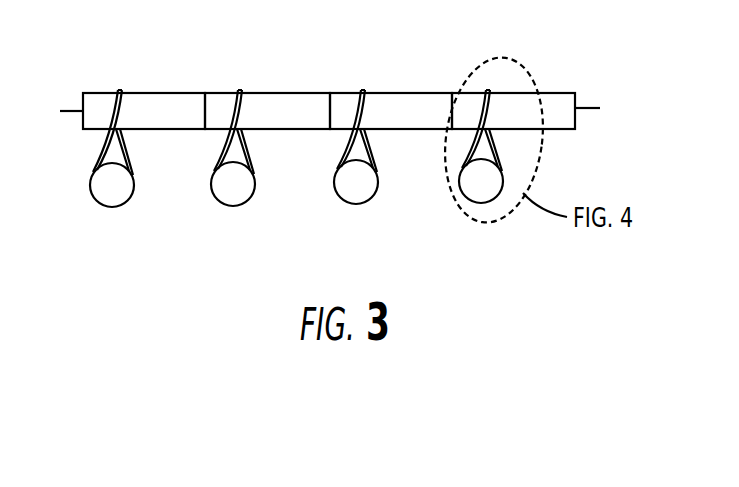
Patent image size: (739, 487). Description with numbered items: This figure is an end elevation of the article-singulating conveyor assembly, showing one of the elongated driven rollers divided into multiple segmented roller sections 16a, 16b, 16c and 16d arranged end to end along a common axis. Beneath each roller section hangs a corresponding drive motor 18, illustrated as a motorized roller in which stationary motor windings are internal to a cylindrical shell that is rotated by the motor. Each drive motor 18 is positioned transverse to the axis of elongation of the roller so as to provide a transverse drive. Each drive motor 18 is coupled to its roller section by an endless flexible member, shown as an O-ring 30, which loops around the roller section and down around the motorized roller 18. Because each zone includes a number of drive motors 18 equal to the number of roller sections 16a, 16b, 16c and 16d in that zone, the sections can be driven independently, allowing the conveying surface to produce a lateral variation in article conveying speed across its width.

The roller section 16a is at (508, 90).
The roller section 16b is at (388, 92).
The roller section 16c is at (268, 93).
The roller section 16d is at (148, 92).
The O-ring 30 is at (126, 163).
The drive motor 18 is at (124, 203).